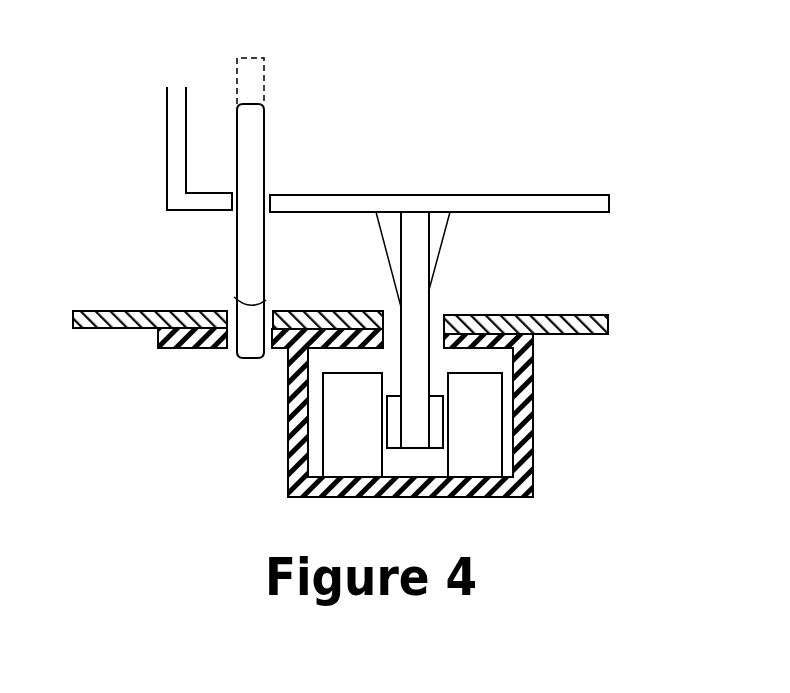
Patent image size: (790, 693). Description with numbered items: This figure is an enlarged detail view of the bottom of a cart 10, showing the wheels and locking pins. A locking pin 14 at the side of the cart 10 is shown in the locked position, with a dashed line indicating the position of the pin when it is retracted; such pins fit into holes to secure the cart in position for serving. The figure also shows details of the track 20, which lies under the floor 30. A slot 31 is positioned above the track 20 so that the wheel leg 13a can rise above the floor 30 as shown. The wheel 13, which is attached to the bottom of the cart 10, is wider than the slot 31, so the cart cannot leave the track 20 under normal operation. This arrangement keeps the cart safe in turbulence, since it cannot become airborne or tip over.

The cart 10 is at (158, 178).
The locking pin 14 is at (227, 269).
The wheel leg 13a is at (442, 268).
The floor 30 is at (572, 315).
The track 20 is at (282, 433).
The wheel 13 is at (503, 410).
The slot 31 is at (395, 325).